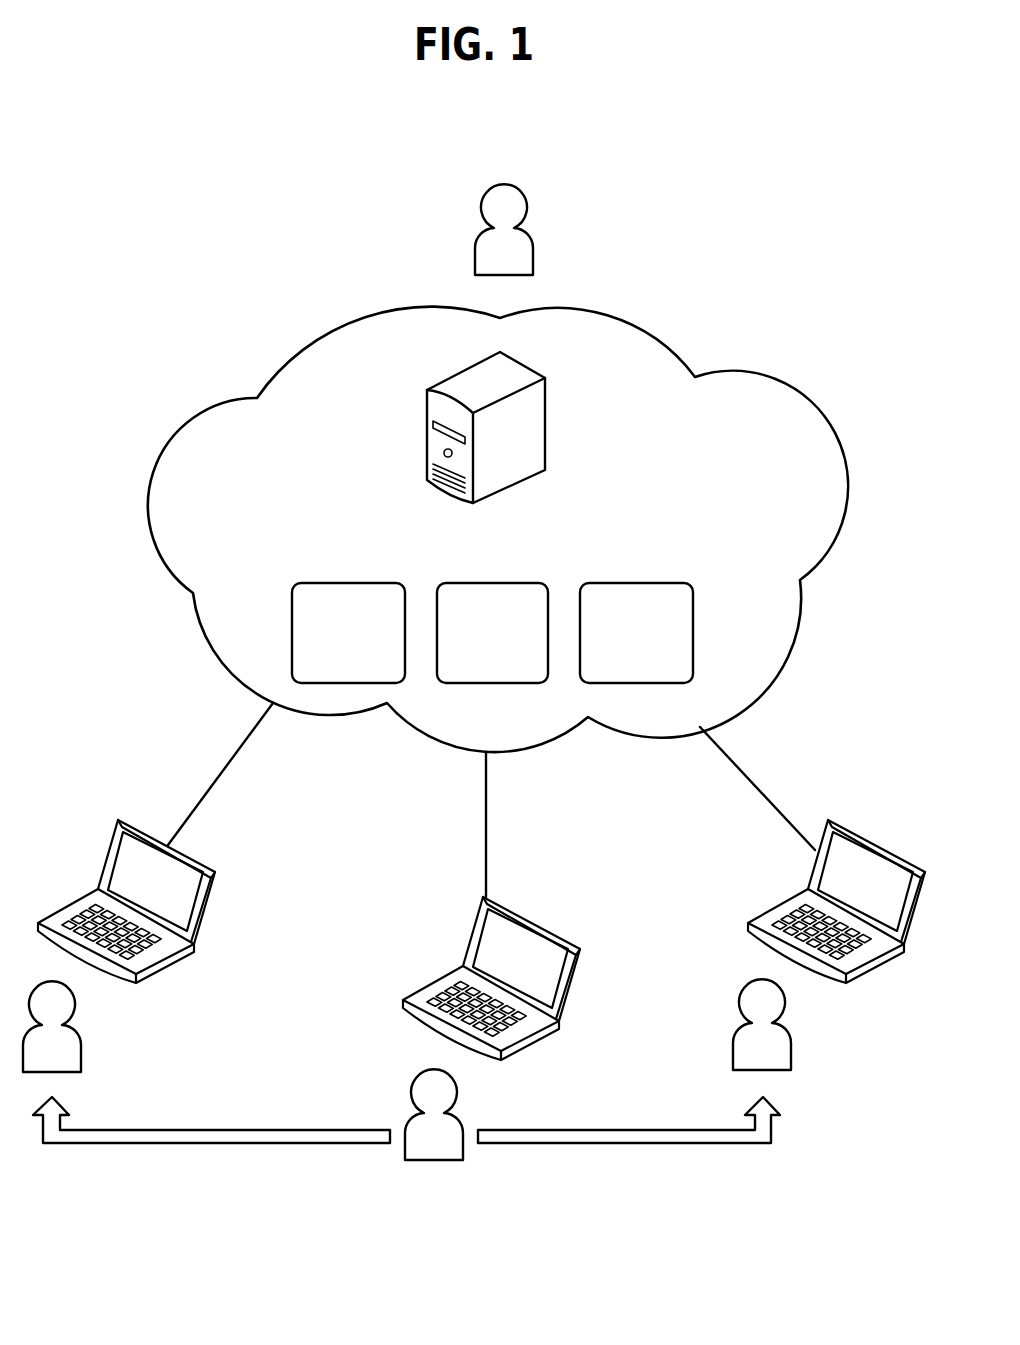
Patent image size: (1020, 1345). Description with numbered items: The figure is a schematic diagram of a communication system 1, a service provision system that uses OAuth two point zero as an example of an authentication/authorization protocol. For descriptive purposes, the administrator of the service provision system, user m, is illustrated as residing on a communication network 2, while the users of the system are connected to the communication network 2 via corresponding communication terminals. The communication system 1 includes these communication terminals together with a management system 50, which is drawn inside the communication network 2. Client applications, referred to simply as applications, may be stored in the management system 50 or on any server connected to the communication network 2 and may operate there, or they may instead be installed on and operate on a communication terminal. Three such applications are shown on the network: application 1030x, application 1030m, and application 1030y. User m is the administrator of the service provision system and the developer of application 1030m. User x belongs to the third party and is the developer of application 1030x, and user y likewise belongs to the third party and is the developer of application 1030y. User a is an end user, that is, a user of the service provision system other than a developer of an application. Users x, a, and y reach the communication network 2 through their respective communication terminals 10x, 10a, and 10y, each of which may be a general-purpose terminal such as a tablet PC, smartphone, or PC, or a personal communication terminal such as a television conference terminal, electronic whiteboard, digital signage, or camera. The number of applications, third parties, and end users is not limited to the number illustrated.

The communication system 1 is at (186, 159).
The communication network 2 is at (735, 378).
The management system 50 is at (466, 372).
The application 1030x is at (377, 559).
The application 1030m is at (523, 559).
The application 1030y is at (667, 559).
The communication terminal 10x is at (200, 860).
The communication terminal 10a is at (530, 916).
The communication terminal 10y is at (875, 837).
The user m is at (533, 249).
The user x is at (82, 1046).
The user y is at (792, 1044).
The user a is at (432, 1160).